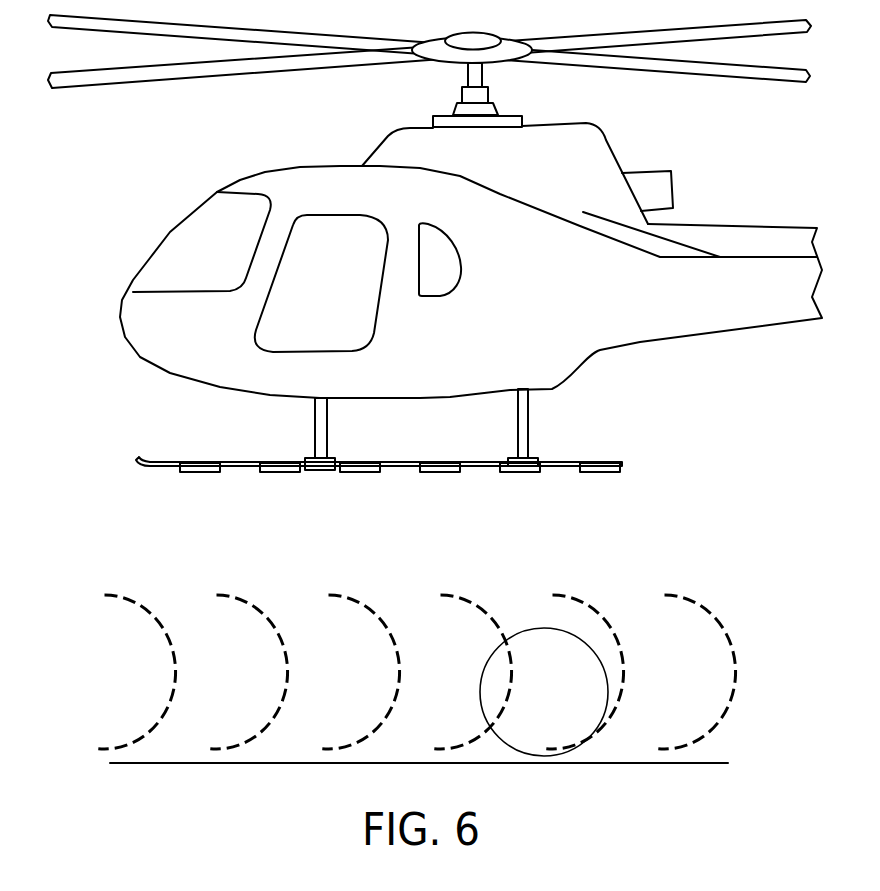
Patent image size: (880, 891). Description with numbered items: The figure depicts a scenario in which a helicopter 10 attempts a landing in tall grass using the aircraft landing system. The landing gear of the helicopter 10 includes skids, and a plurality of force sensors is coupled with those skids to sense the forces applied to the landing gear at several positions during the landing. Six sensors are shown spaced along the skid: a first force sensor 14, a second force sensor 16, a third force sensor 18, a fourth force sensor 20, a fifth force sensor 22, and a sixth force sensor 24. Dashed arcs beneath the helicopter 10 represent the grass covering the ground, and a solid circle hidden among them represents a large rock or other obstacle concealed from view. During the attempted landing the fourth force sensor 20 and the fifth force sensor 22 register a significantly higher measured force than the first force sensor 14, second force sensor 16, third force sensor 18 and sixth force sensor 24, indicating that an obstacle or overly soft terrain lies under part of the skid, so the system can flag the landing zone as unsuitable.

The helicopter 10 is at (444, 360).
The first force sensor 14 is at (202, 472).
The second force sensor 16 is at (280, 472).
The third force sensor 18 is at (360, 472).
The fourth force sensor 20 is at (437, 472).
The fifth force sensor 22 is at (518, 472).
The sixth force sensor 24 is at (602, 472).